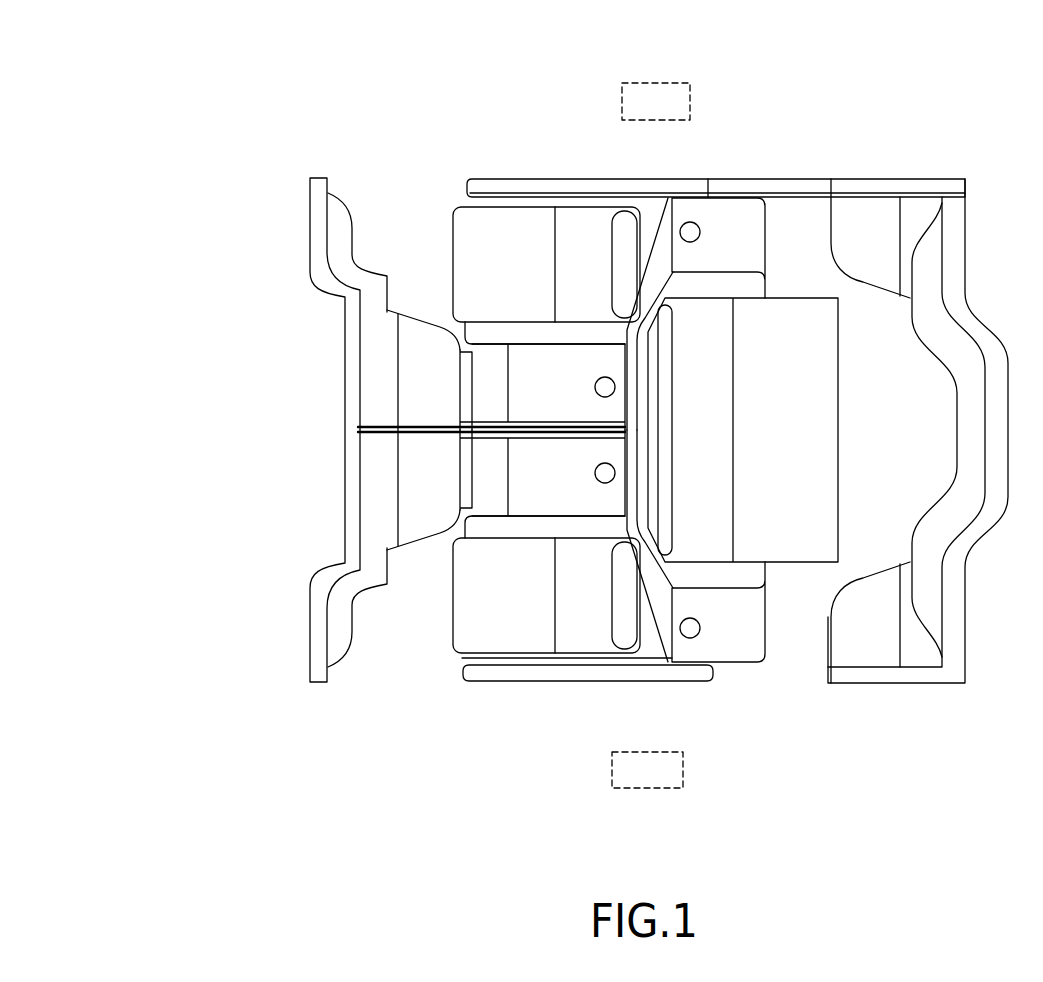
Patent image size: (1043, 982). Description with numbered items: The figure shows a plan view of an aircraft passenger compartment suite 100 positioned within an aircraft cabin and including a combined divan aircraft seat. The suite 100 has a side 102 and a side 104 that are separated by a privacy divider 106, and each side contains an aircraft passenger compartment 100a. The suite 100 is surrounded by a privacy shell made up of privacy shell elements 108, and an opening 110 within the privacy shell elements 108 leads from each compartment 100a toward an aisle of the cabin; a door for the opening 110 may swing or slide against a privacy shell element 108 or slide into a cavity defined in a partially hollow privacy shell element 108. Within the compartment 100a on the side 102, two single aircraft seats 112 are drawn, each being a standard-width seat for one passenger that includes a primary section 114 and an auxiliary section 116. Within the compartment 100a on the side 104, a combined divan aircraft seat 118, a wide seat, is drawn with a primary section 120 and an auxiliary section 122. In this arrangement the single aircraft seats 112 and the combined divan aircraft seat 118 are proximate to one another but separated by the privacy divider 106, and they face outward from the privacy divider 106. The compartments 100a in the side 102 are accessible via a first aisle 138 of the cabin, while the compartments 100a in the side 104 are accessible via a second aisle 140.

The aircraft passenger compartment suite 100 is at (210, 72).
The aircraft passenger compartment 100a is at (365, 178).
The side 102 is at (620, 170).
The side 104 is at (537, 728).
The privacy divider 106 is at (680, 177).
The privacy shell element 108 is at (310, 222).
The opening 110 is at (397, 190).
The single aircraft seat 112 is at (427, 268).
The primary section 114 is at (522, 278).
The auxiliary section 116 is at (574, 397).
The combined divan aircraft seat 118 is at (862, 437).
The primary section 120 is at (802, 445).
The auxiliary section 122 is at (747, 248).
The first aisle 138 is at (677, 117).
The second aisle 140 is at (668, 784).